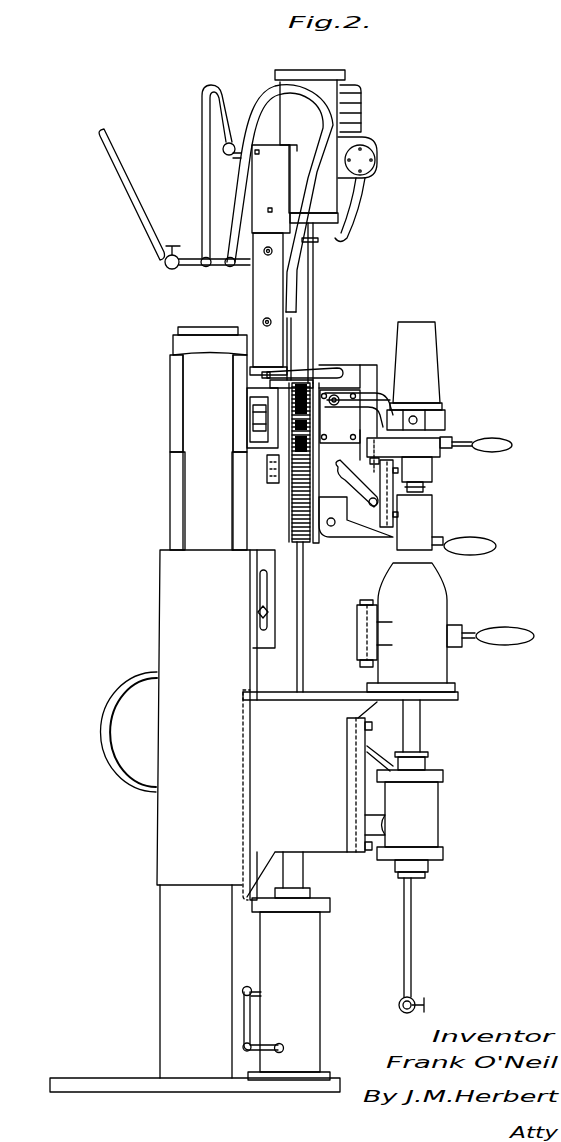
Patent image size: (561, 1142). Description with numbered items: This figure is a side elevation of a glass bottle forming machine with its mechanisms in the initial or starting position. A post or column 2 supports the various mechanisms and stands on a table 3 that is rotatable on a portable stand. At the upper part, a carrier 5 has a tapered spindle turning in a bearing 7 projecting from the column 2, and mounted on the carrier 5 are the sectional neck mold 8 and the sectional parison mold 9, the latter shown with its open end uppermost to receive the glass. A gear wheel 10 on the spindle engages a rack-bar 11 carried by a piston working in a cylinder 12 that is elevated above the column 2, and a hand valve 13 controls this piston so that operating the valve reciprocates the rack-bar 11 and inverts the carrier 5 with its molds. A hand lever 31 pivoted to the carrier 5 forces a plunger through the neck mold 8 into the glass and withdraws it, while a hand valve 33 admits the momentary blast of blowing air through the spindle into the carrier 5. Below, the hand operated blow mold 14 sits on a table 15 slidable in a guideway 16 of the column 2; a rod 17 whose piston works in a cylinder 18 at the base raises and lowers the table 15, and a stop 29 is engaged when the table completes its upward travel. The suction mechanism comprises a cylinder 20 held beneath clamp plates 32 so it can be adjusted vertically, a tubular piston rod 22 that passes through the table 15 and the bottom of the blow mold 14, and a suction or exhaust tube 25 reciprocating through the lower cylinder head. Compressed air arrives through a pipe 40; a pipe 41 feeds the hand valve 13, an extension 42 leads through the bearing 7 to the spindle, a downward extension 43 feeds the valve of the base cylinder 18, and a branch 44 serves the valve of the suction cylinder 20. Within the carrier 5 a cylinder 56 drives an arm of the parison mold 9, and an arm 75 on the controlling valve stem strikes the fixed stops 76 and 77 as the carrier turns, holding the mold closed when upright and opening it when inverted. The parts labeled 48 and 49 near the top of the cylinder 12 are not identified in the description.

The post or column 2 is at (216, 702).
The table 3 is at (80, 1086).
The carrier 5 is at (356, 513).
The bearing 7 is at (246, 398).
The sectional neck mold 8 is at (415, 452).
The sectional blank or parison mold 9 is at (429, 353).
The gear wheel 10 is at (290, 425).
The rack-bar 11 is at (301, 543).
The cylinder 12 is at (276, 77).
The hand valve 13 is at (378, 162).
The blow mold 14 is at (440, 600).
The table 15 is at (318, 690).
The guideway 16 is at (253, 683).
The rod 17 is at (304, 873).
The cylinder 18 is at (318, 988).
The cylinder 20 is at (437, 815).
The tubular piston rod 22 is at (420, 730).
The suction or exhaust tube 25 is at (410, 945).
The stop 29 is at (258, 613).
The hand lever 31 is at (464, 546).
The clamp plates 32 is at (348, 789).
The hand valve 33 is at (366, 522).
The pipe 40 is at (199, 270).
The pipe 41 is at (205, 182).
The extension 42 is at (293, 344).
The downward extension 43 is at (304, 604).
The branch 44 is at (104, 728).
The fitting 48 is at (353, 87).
The fitting 49 is at (361, 127).
The cylinder 56 is at (340, 416).
The arm 75 is at (265, 376).
The fixed stop 76 is at (263, 366).
The fixed stop 77 is at (271, 486).